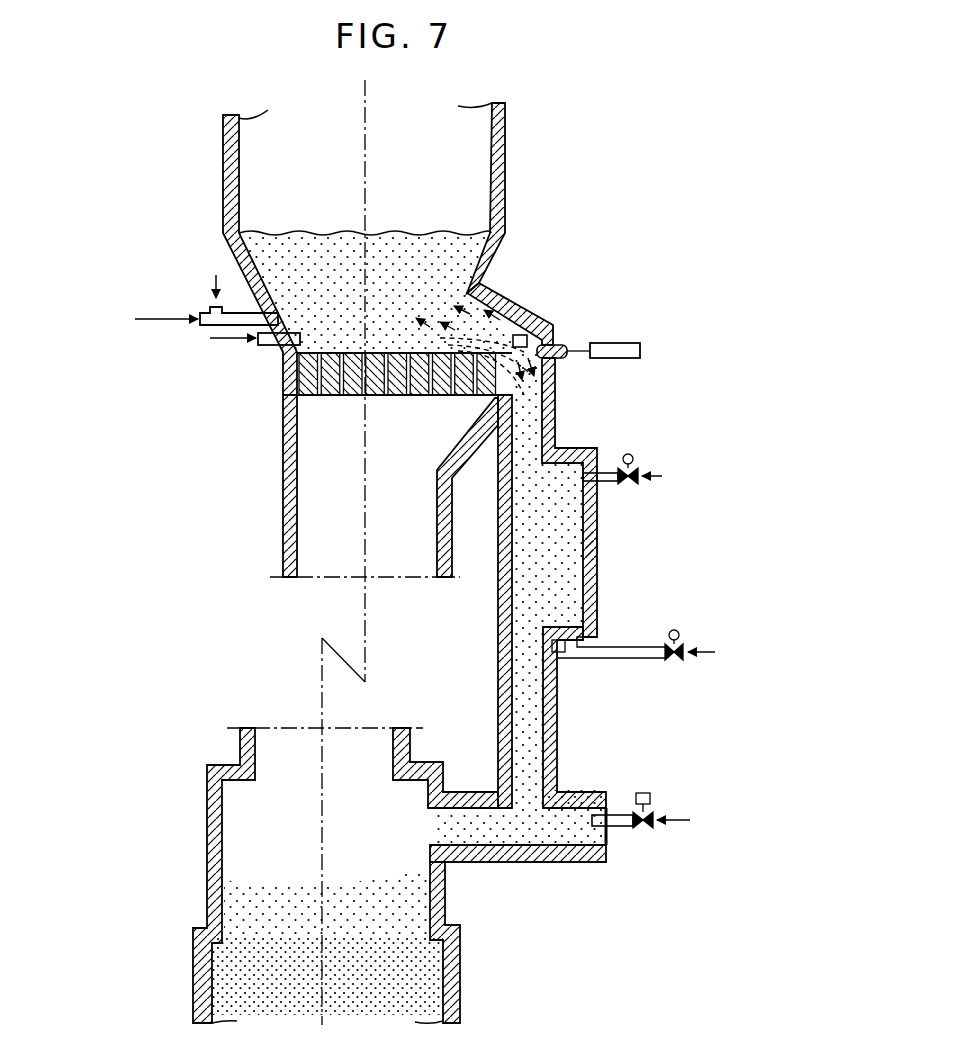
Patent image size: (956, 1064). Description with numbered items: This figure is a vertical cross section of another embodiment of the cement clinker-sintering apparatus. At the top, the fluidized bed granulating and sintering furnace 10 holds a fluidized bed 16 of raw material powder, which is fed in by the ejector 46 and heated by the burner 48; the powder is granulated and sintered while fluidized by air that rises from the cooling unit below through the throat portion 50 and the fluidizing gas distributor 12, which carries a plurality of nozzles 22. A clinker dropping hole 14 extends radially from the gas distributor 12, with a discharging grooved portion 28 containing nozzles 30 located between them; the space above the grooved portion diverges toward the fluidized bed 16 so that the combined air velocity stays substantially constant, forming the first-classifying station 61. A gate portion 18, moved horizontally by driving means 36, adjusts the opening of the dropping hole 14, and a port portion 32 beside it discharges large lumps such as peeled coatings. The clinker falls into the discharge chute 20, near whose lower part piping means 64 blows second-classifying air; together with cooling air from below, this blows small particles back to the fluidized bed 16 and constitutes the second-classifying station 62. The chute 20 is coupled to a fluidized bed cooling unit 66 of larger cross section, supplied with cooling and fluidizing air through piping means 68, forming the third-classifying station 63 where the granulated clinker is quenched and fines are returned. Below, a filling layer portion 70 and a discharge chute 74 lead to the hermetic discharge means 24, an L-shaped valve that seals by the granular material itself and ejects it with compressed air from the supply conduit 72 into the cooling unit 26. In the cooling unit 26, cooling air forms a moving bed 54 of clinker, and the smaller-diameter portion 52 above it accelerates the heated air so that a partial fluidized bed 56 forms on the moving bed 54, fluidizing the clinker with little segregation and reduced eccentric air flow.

The fluidized bed granulating and sintering furnace 10 is at (507, 153).
The fluidizing gas distributor 12 is at (330, 397).
The clinker dropping hole 14 is at (532, 362).
The fluidized bed 16 is at (406, 240).
The gate portion 18 is at (558, 340).
The discharge chute 20 is at (555, 425).
The nozzles 22 is at (342, 397).
The hermetic discharge means 24 is at (568, 862).
The cooling unit 26 is at (462, 990).
The discharging grooved portion 28 is at (420, 397).
The nozzles 30 is at (486, 401).
The port portion 32 is at (535, 328).
The driving means 36 is at (614, 343).
The ejector 46 is at (210, 327).
The burner 48 is at (270, 348).
The throat portion 50 is at (282, 507).
The smaller-diameter portion 52 is at (447, 875).
The moving bed 54 is at (390, 960).
The partial fluidized bed 56 is at (390, 905).
The first-classifying station 61 is at (510, 323).
The second-classifying station 62 is at (523, 402).
The third-classifying station 63 is at (563, 545).
The piping means 64 is at (612, 485).
The fluidized bed cooling unit 66 is at (563, 578).
The piping means 68 is at (625, 647).
The filling layer portion 70 is at (530, 707).
The supply conduit 72 is at (618, 826).
The discharge chute 74 is at (558, 742).